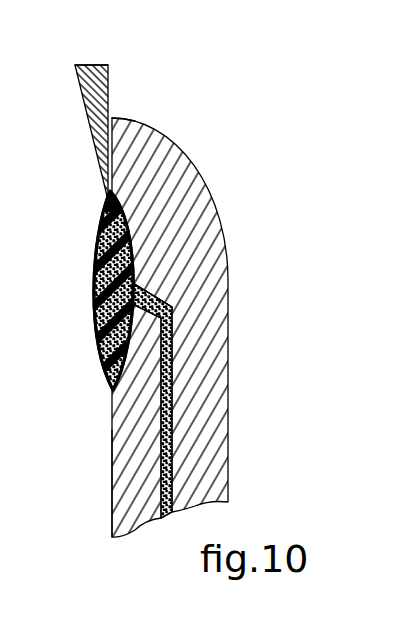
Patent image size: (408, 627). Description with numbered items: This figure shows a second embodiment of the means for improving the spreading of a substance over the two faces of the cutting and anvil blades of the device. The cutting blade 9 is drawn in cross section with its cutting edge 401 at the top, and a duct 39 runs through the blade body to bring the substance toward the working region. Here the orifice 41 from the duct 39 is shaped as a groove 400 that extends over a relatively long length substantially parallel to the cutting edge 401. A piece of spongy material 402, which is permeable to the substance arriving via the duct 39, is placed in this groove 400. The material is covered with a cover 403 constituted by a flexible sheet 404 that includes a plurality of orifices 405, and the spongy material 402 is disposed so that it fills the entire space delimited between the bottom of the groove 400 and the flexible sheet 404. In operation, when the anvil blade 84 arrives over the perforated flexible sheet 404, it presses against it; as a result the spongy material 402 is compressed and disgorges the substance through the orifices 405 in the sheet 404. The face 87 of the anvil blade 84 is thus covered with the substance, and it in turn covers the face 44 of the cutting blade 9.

The cutting blade 9 is at (185, 182).
The anvil blade 84 is at (80, 88).
The face of the anvil blade 87 is at (110, 86).
The cutting edge 401 is at (113, 119).
The groove 400 is at (94, 322).
The piece of spongy material 402 is at (92, 293).
The cover 403 is at (101, 355).
The flexible sheet 404 is at (92, 266).
The orifices 405 is at (98, 232).
The orifice 41 is at (150, 283).
The duct 39 is at (170, 432).
The face of the cutting blade 44 is at (100, 478).